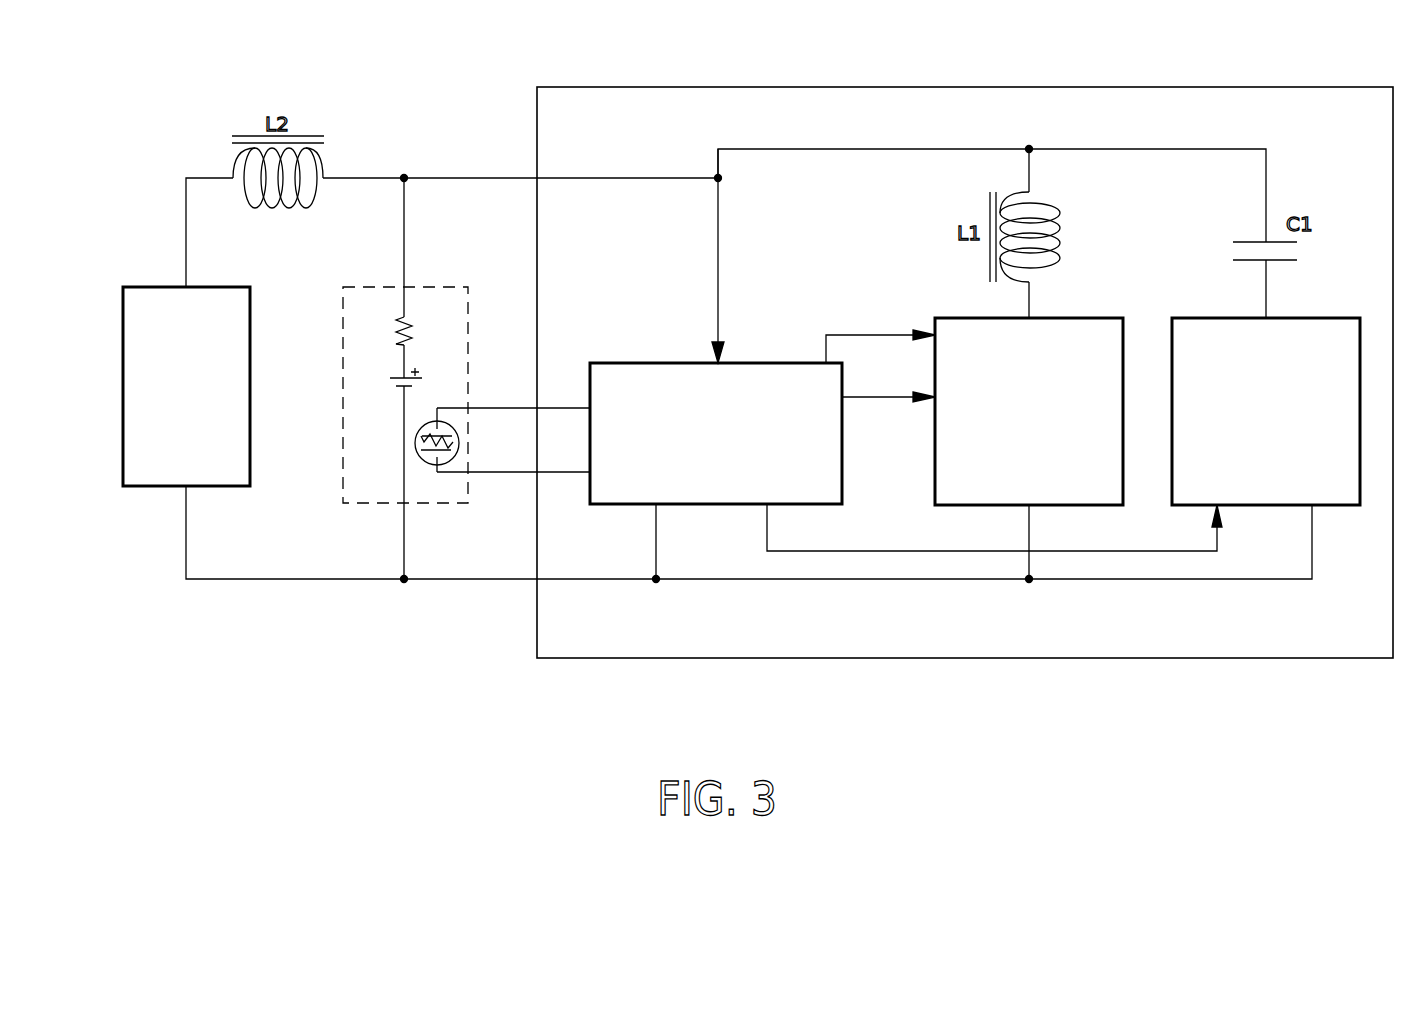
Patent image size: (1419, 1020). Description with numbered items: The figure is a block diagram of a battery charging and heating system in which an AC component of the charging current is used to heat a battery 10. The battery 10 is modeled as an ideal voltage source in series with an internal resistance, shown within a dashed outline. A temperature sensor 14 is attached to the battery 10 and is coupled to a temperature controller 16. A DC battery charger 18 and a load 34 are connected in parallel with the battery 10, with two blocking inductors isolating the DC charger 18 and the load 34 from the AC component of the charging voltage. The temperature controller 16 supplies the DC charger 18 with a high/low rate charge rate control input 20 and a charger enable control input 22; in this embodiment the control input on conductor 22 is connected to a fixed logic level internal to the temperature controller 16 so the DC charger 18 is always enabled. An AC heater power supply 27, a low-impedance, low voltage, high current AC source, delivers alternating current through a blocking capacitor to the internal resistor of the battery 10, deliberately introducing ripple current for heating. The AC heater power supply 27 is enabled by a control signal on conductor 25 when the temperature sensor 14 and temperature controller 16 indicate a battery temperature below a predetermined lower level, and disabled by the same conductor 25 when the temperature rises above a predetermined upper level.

The load 34 is at (122, 320).
The battery 10 is at (367, 268).
The temperature sensor 14 is at (455, 430).
The temperature controller 16 is at (656, 362).
The DC battery charger 18 is at (1122, 318).
The AC heater power supply 27 is at (1350, 318).
The charger enable control input 22 is at (890, 335).
The high/low rate charge rate control input 20 is at (872, 399).
The conductor 25 is at (766, 527).